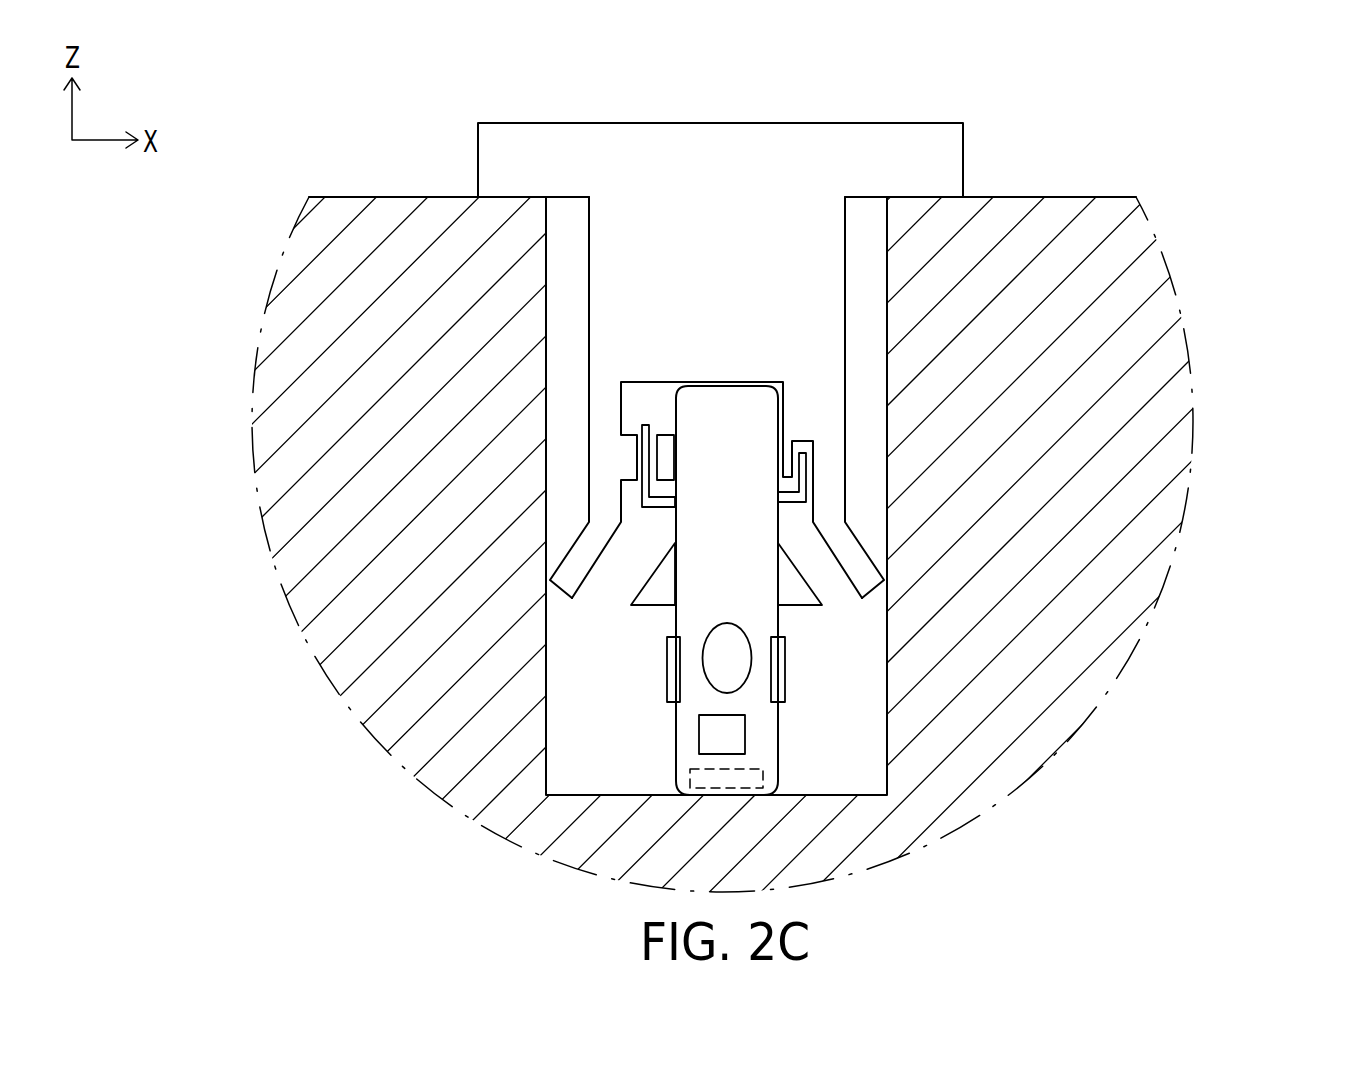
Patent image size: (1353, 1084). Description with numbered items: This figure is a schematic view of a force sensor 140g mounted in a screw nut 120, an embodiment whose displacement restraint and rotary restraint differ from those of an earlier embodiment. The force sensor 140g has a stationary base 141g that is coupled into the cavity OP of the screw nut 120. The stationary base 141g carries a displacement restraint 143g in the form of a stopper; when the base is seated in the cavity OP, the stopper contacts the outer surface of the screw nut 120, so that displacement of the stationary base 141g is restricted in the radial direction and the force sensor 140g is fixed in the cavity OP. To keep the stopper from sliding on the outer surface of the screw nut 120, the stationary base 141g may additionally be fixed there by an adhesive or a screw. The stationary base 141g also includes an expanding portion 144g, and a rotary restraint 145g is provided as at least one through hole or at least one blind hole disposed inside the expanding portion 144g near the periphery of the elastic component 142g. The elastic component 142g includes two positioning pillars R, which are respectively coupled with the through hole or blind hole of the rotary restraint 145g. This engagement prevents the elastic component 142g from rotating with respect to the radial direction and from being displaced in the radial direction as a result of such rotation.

The screw nut 120 is at (368, 212).
The force sensor 140g is at (1098, 903).
The stationary base 141g is at (650, 295).
The elastic component 142g is at (770, 726).
The displacement restraint 143g is at (513, 140).
The expanding portion 144g is at (582, 553).
The rotary restraint 145g is at (715, 453).
The positioning pillars R is at (645, 478).
The cavity OP is at (601, 702).